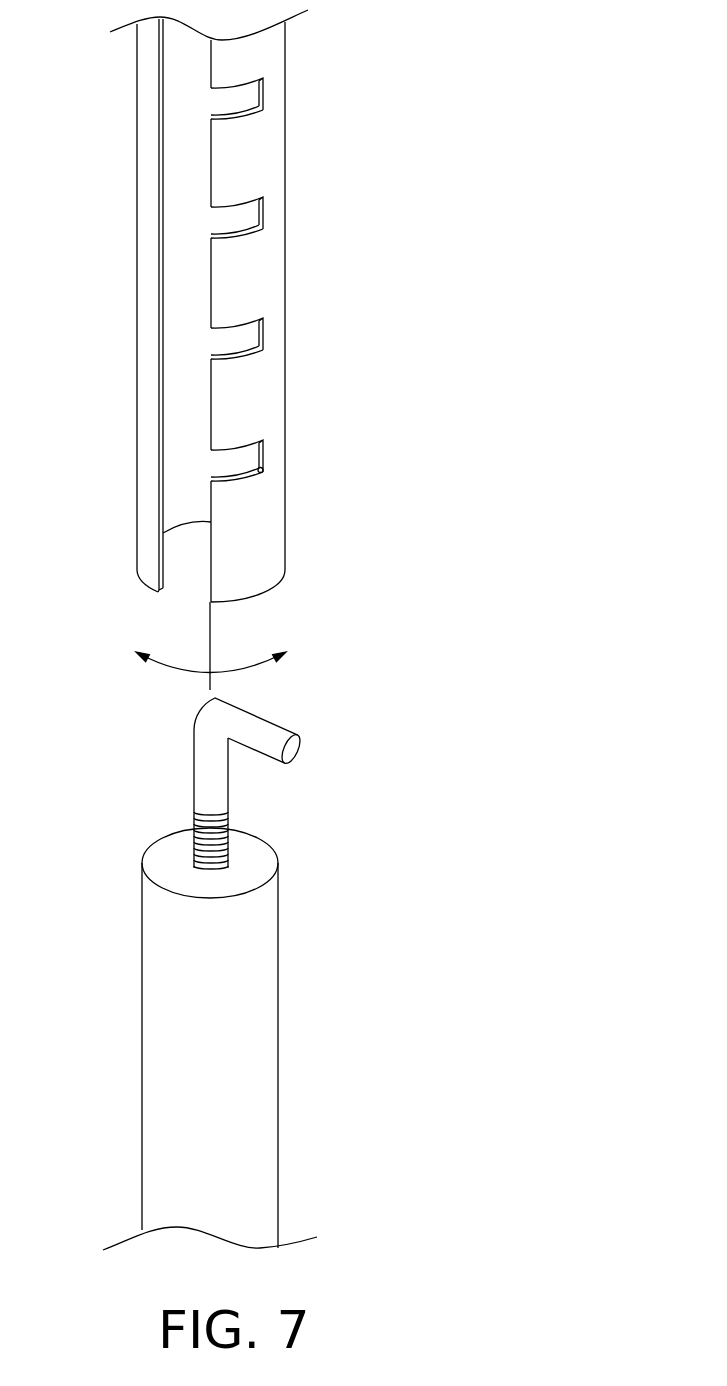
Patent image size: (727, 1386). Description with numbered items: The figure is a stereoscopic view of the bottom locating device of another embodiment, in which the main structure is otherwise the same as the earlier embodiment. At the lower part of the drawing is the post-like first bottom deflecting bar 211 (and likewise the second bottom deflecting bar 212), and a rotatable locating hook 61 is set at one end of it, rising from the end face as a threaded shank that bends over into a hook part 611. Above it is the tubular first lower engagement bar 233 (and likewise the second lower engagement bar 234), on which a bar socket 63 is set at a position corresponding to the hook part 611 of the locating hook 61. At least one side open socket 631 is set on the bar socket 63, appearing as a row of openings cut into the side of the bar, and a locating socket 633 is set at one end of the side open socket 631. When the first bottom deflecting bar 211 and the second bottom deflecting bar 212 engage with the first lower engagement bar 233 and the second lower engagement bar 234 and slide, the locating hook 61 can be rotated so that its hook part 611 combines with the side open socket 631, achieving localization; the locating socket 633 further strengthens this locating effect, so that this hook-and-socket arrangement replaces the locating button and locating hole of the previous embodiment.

The first lower engagement bar 233 is at (245, 306).
The second lower engagement bar 234 is at (245, 306).
The bar socket 63 is at (192, 453).
The side open socket 631 is at (284, 449).
The locating socket 633 is at (262, 470).
The rotatable locating hook 61 is at (208, 770).
The hook part 611 is at (273, 737).
The first bottom deflecting bar 211 is at (256, 1039).
The second bottom deflecting bar 212 is at (265, 1057).